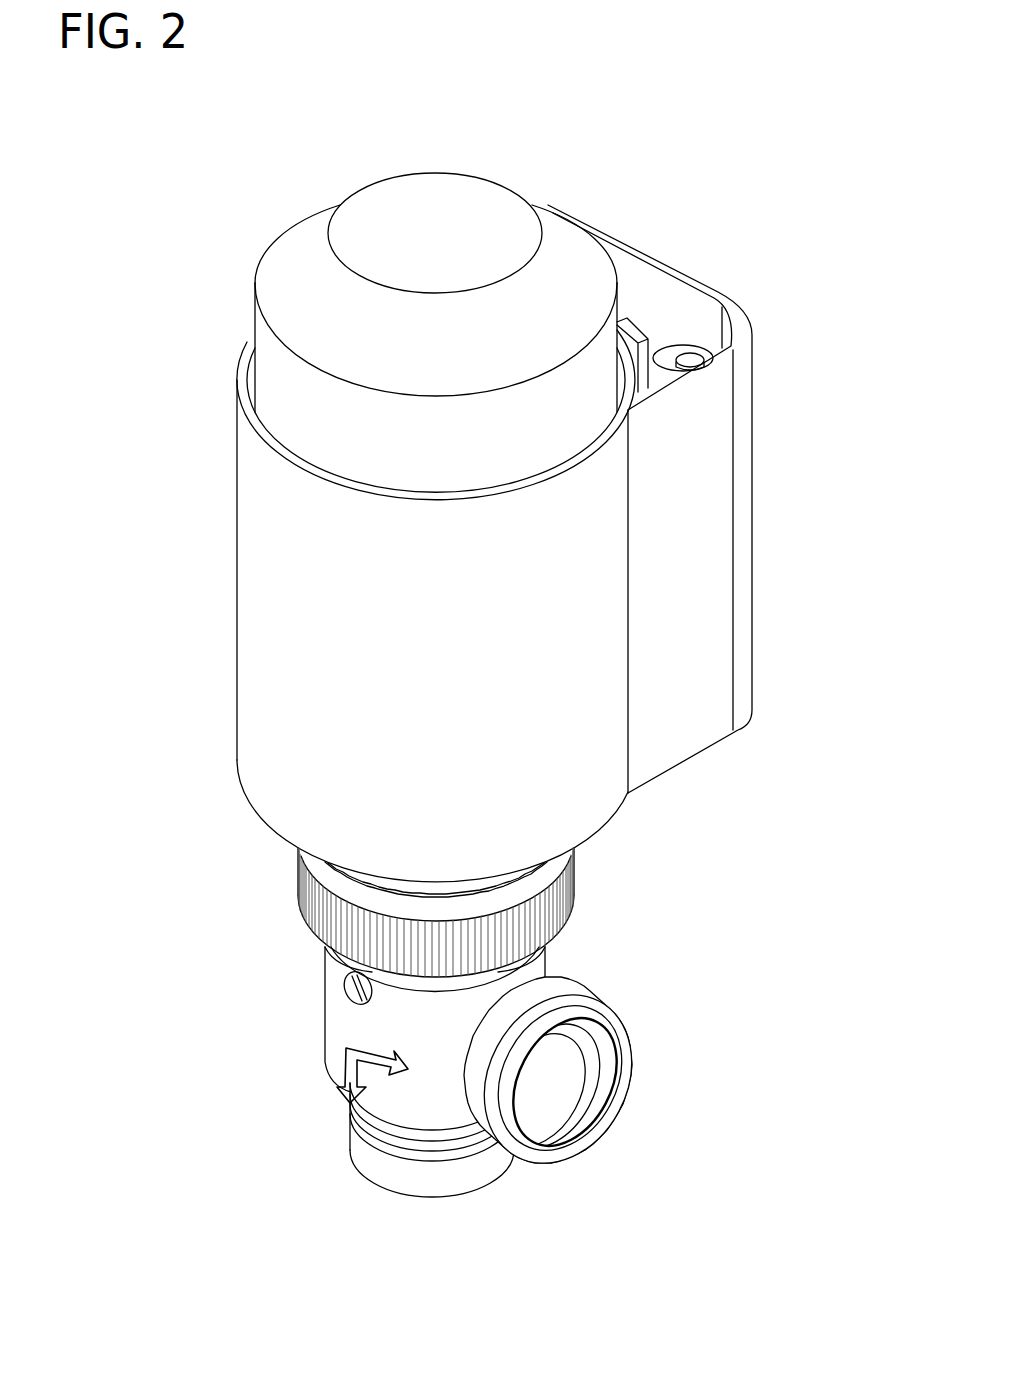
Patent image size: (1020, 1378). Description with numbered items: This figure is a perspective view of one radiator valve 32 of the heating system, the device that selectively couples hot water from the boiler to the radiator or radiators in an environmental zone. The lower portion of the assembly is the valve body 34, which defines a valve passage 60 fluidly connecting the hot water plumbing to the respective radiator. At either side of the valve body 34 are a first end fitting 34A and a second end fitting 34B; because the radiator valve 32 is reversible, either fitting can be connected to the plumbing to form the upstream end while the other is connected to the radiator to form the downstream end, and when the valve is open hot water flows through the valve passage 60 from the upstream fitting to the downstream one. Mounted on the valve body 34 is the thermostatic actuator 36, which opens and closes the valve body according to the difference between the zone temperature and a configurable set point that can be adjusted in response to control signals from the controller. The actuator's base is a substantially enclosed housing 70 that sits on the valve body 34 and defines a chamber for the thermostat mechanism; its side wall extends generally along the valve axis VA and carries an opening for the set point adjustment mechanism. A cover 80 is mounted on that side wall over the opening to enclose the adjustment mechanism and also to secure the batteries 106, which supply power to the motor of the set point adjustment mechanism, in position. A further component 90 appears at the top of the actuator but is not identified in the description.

The radiator valve 32 is at (125, 1229).
The valve body 34 is at (337, 1077).
The first end fitting 34A is at (444, 1178).
The second end fitting 34B is at (572, 1003).
The thermostatic actuator 36 is at (224, 601).
The valve passage 60 is at (588, 1096).
The base (housing) 70 is at (237, 735).
The cover 80 is at (742, 485).
The cap 90 is at (298, 250).
The batteries 106 is at (683, 348).